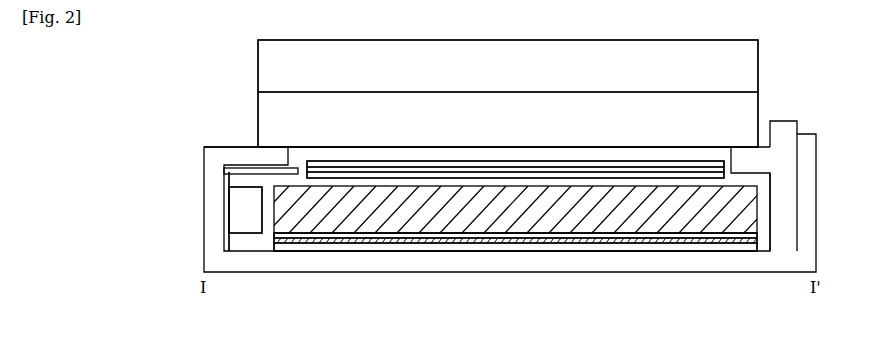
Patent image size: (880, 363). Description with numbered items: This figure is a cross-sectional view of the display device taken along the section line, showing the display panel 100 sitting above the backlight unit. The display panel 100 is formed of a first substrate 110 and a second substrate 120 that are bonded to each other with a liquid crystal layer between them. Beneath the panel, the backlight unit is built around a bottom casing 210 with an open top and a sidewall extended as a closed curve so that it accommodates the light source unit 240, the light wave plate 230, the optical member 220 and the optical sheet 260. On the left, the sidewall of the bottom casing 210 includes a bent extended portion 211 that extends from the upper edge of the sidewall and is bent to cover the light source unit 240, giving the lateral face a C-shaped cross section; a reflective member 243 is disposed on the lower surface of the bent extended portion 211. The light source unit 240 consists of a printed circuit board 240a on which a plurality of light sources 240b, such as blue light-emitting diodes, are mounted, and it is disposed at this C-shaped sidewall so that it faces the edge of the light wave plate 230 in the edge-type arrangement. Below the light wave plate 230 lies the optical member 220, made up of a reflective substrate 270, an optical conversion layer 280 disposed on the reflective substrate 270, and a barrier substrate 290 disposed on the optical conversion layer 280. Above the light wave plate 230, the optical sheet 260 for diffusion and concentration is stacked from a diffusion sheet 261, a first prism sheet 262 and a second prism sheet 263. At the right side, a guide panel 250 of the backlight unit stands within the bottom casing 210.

The display panel 100 is at (811, 59).
The first substrate 110 is at (758, 105).
The second substrate 120 is at (758, 63).
The bottom casing 210 is at (701, 263).
The bent extended portion 211 is at (233, 141).
The optical member 220 is at (428, 319).
The light wave plate 230 is at (485, 229).
The light source unit 240 is at (282, 319).
The printed circuit board 240a is at (228, 252).
The light source 240b is at (248, 234).
The reflective member 243 is at (254, 173).
The guide panel 250 is at (783, 244).
The optical sheet 260 is at (610, 319).
The diffusion sheet 261 is at (540, 176).
The first prism sheet 262 is at (558, 170).
The second prism sheet 263 is at (593, 164).
The reflective substrate 270 is at (349, 250).
The optical conversion layer 280 is at (370, 243).
The barrier substrate 290 is at (413, 238).